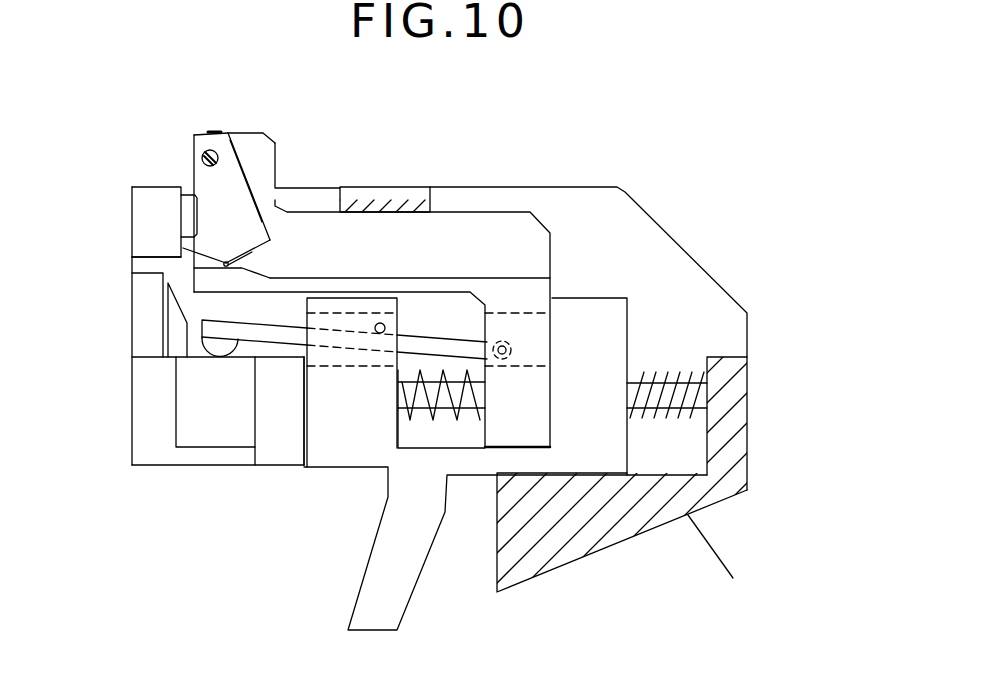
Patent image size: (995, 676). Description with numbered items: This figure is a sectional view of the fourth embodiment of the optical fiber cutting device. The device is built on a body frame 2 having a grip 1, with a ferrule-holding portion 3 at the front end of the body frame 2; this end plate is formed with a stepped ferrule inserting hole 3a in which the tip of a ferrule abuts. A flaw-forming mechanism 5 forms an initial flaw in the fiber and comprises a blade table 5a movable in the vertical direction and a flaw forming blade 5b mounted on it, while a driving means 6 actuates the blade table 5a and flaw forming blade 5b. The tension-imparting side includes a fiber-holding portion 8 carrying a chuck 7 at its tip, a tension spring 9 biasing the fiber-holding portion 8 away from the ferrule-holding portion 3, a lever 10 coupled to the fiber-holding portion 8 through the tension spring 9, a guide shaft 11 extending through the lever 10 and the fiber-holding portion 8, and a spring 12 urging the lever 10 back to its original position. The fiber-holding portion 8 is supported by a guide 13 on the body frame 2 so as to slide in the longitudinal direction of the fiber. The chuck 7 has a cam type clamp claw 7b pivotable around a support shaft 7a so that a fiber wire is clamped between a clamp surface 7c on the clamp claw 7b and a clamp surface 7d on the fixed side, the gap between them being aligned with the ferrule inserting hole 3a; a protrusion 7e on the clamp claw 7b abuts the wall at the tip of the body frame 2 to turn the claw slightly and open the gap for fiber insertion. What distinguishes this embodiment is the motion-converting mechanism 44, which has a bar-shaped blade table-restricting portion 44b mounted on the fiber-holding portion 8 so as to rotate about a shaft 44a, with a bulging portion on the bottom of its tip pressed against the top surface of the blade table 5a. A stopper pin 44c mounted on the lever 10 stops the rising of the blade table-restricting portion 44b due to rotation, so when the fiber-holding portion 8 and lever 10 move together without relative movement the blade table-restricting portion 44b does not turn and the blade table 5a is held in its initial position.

The grip 1 is at (580, 560).
The body frame 2 is at (643, 230).
The ferrule-holding portion 3 is at (130, 326).
The ferrule inserting hole 3a is at (135, 262).
The flaw-forming mechanism 5 is at (175, 411).
The blade table 5a is at (187, 393).
The flaw forming blade 5b is at (176, 327).
The driving means 6 is at (240, 522).
The chuck 7 is at (207, 177).
The support shaft 7a is at (203, 155).
The clamp claw 7b is at (207, 183).
The clamp surface 7c is at (242, 253).
The clamp surface 7d is at (242, 268).
The protrusion 7e is at (180, 247).
The fiber-holding portion 8 is at (482, 240).
The tension spring 9 is at (433, 410).
The lever 10 is at (374, 561).
The guide shaft 11 is at (700, 397).
The spring 12 is at (644, 375).
The guide 13 is at (386, 202).
The motion-converting mechanism 44 is at (282, 358).
The shaft 44a is at (508, 350).
The blade table-restricting portion 44b is at (257, 330).
The stopper pin 44c is at (380, 334).